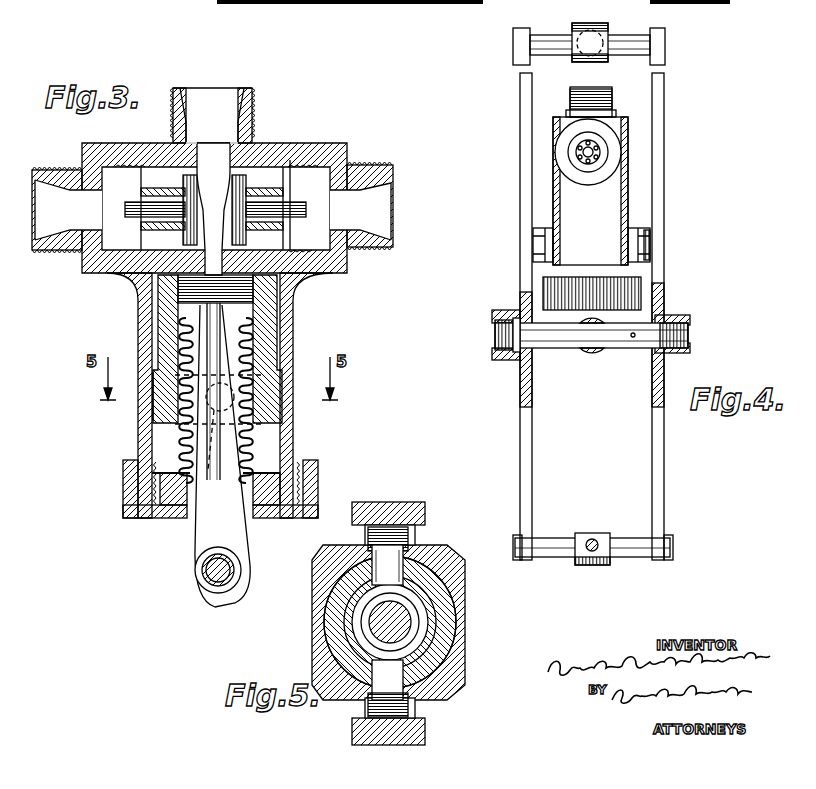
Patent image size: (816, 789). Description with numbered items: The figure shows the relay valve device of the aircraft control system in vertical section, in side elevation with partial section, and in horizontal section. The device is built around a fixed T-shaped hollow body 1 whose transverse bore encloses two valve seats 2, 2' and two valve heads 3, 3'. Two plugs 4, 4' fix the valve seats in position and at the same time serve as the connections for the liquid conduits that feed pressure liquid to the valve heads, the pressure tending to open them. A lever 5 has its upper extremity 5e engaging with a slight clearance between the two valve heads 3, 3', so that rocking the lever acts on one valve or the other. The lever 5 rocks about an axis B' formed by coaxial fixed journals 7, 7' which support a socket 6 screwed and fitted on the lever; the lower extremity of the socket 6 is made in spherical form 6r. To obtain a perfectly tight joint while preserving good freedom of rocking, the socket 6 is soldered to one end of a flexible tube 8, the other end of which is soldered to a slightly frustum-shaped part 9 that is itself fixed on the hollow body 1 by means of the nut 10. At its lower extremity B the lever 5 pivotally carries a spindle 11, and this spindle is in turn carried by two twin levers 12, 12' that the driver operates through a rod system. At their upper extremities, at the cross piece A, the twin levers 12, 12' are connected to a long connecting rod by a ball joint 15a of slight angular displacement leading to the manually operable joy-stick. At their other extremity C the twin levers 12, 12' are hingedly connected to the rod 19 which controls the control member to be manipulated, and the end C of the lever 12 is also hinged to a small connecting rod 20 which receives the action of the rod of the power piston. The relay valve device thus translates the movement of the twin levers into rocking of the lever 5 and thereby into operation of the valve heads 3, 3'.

In FIG. 3, the hollow body 1 is at (150, 320).
In FIG. 4, the hollow body 1 is at (553, 200).
In FIG. 5, the hollow body 1 is at (460, 665).
In FIG. 3, the valve seat 2 is at (269, 177).
In FIG. 3, the valve seat 2' is at (161, 182).
In FIG. 3, the valve head 3 is at (282, 184).
In FIG. 3, the valve head 3' is at (148, 184).
In FIG. 3, the plug 4 is at (361, 188).
In FIG. 3, the plug 4' is at (67, 196).
In FIG. 3, the lever 5 is at (225, 310).
In FIG. 4, the lever 5 is at (598, 323).
In FIG. 5, the lever 5 is at (408, 622).
In FIG. 3, the upper extremity of lever 5e is at (214, 185).
In FIG. 3, the socket 6 is at (273, 355).
In FIG. 5, the socket 6 is at (330, 597).
In FIG. 3, the spherical lower extremity of socket 6r is at (152, 395).
In FIG. 3, the fixed journal 7 is at (222, 456).
In FIG. 4, the fixed journal 7 is at (657, 236).
In FIG. 5, the fixed journal 7 is at (388, 513).
In FIG. 4, the fixed journal 7' is at (518, 247).
In FIG. 5, the fixed journal 7' is at (408, 702).
In FIG. 3, the flexible tube 8 is at (258, 442).
In FIG. 3, the frustum shaped part 9 is at (279, 490).
In FIG. 3, the nut 10 is at (137, 502).
In FIG. 3, the spindle 11 is at (221, 580).
In FIG. 4, the spindle 11 is at (552, 350).
In FIG. 4, the twin lever 12 is at (510, 316).
In FIG. 4, the twin lever 12' is at (677, 316).
In FIG. 4, the ball joint 15a is at (603, 57).
In FIG. 4, the rod 19 is at (602, 533).
In FIG. 4, the small connecting rod 20 is at (595, 557).
In FIG. 4, the upper cross bar A is at (512, 44).
In FIG. 3, the lower extremity of lever B is at (198, 570).
In FIG. 4, the lower extremity of lever B is at (594, 348).
In FIG. 3, the pivot axis B' is at (218, 388).
In FIG. 4, the pivot axis B' is at (672, 245).
In FIG. 5, the pivot axis B' is at (412, 548).
In FIG. 4, the end of twin levers C is at (520, 536).